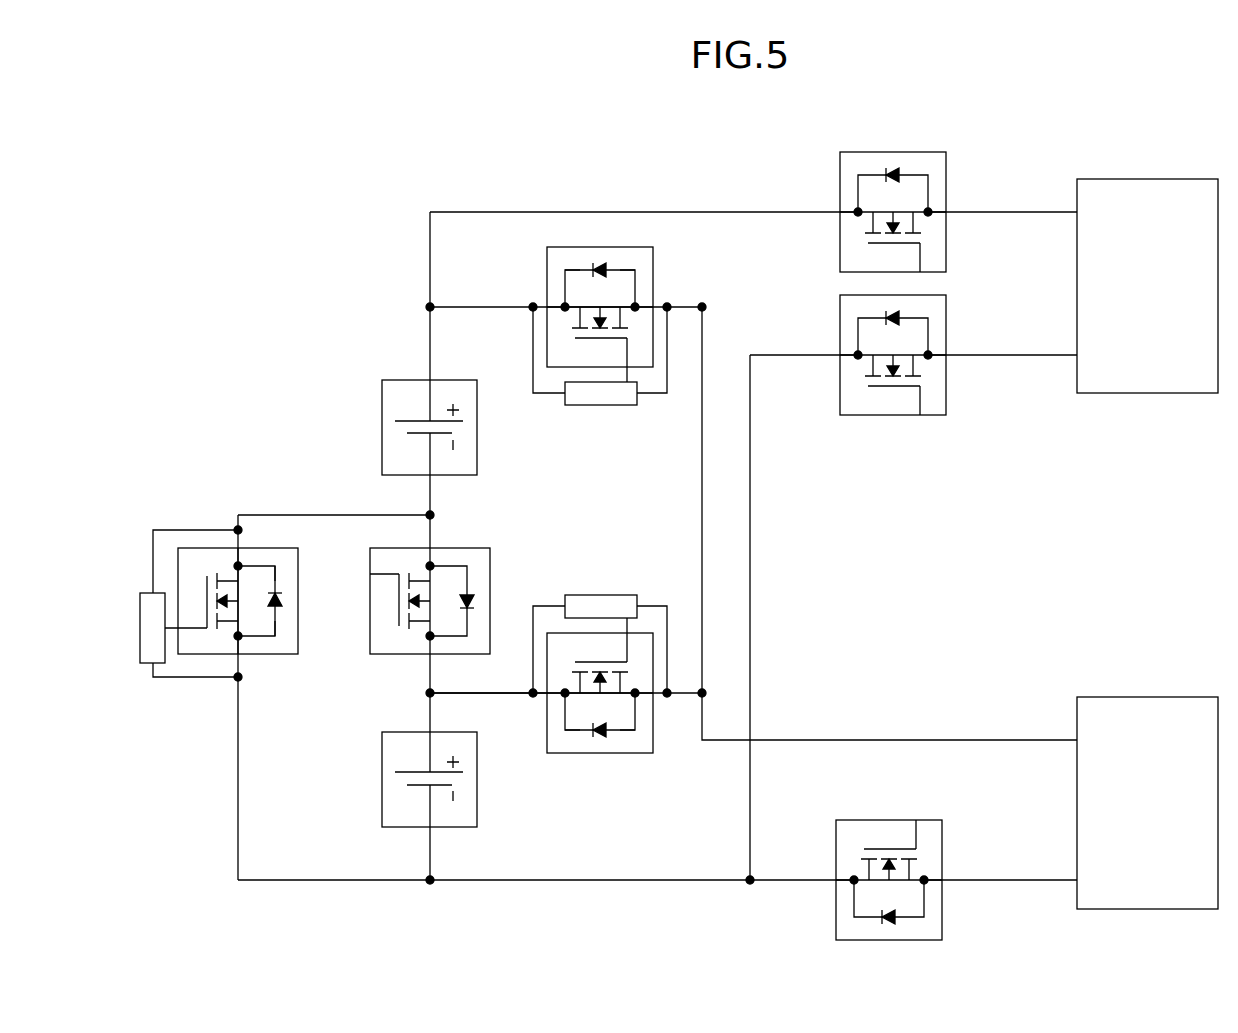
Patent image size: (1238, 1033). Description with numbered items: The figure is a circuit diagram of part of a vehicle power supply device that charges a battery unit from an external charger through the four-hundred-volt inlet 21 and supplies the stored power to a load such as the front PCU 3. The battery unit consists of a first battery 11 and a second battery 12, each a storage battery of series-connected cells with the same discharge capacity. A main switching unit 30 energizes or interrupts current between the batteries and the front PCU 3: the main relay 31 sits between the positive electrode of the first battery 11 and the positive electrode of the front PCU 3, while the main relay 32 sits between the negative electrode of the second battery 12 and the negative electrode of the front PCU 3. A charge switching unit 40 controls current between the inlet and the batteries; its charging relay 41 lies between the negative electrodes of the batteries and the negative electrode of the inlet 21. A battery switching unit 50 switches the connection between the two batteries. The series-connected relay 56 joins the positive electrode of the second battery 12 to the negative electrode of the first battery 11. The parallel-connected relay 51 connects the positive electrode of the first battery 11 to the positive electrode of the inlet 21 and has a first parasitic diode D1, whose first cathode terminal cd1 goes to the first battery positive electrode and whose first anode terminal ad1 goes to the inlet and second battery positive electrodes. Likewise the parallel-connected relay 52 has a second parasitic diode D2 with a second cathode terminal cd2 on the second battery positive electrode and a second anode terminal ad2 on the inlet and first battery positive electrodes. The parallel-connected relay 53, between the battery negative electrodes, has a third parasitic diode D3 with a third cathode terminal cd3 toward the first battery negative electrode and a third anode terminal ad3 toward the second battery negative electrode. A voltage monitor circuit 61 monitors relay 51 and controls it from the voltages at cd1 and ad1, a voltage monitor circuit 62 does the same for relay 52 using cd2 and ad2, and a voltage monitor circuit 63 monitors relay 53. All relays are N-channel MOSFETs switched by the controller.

The front PCU 3 is at (1196, 167).
The 400 V inlet 21 is at (1172, 697).
The main switching unit 30 is at (937, 273).
The main relay 31 is at (906, 141).
The main relay 32 is at (946, 328).
The charge switching unit 40 is at (753, 541).
The charging relay 41 is at (889, 820).
The battery switching unit 50 is at (453, 689).
The parallel-connected relay 51 is at (660, 262).
The parallel-connected relay 52 is at (638, 735).
The parallel-connected relay 53 is at (267, 618).
The series-connected relay 56 is at (445, 550).
The voltage monitor circuit 61 is at (590, 405).
The voltage monitor circuit 62 is at (598, 594).
The voltage monitor circuit 63 is at (140, 627).
The first battery 11 is at (477, 470).
The second battery 12 is at (477, 822).
The first parasitic diode D1 is at (600, 262).
The first cathode terminal cd1 is at (580, 270).
The first anode terminal ad1 is at (620, 270).
The second parasitic diode D2 is at (600, 738).
The second cathode terminal cd2 is at (580, 738).
The second anode terminal ad2 is at (620, 738).
The third parasitic diode D3 is at (282, 600).
The third cathode terminal cd3 is at (278, 578).
The third anode terminal ad3 is at (278, 626).